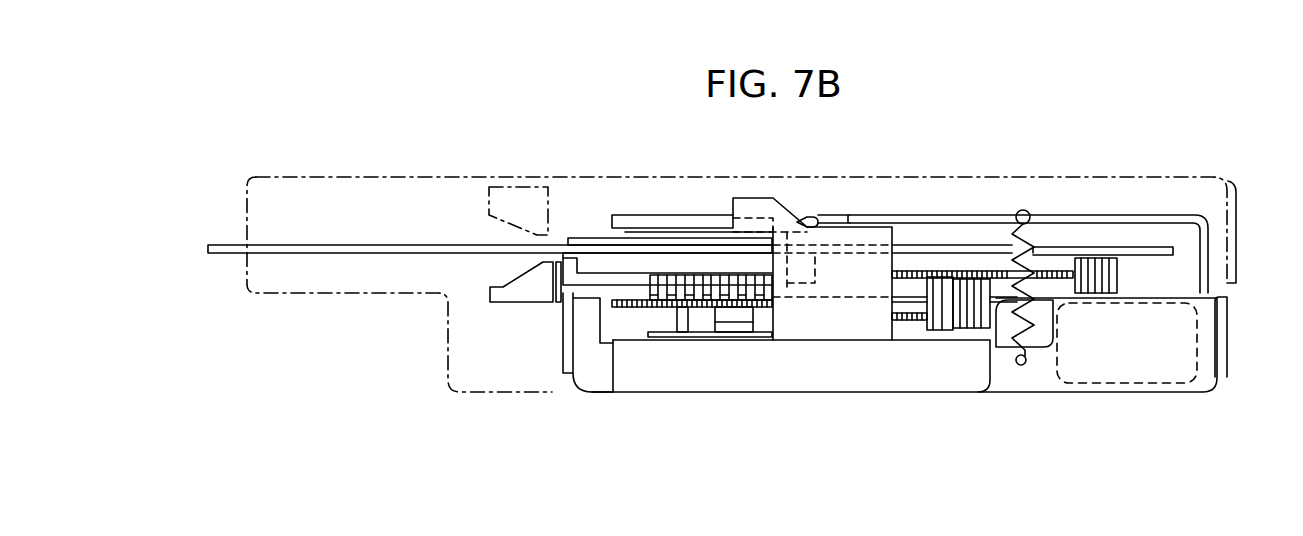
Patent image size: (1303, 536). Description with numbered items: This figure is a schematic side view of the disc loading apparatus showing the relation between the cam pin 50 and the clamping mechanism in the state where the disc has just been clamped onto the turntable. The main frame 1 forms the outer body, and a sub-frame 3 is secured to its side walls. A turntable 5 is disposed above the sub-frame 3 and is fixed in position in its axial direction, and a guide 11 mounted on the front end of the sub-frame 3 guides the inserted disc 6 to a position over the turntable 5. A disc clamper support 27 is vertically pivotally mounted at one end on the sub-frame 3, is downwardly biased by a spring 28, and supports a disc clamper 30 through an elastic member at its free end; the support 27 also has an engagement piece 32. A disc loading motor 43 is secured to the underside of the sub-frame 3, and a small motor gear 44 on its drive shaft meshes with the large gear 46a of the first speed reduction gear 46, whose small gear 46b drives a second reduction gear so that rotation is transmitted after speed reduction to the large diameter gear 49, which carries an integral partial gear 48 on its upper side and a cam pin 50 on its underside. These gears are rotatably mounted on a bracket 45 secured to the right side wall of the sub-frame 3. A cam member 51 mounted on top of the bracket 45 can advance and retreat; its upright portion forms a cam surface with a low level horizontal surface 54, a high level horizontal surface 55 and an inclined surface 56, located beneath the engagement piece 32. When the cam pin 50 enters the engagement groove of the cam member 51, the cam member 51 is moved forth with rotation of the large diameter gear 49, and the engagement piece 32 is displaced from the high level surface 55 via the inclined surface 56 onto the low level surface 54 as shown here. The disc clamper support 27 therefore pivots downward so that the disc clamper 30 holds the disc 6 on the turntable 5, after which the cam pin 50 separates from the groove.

The main frame 1 is at (434, 177).
The sub-frame 3 is at (1228, 357).
The turntable 5 is at (577, 268).
The disc 6 is at (387, 243).
The guide 11 is at (523, 288).
The disc clamper support 27 is at (1107, 214).
The spring 28 is at (1037, 238).
The disc clamper 30 is at (587, 238).
The engagement piece 32 is at (836, 217).
The disc loading motor 43 is at (1193, 332).
The motor gear 44 is at (1103, 260).
The bracket 45 is at (622, 372).
The first speed reduction gear 46 is at (961, 330).
The large gear 46a is at (908, 278).
The small gear 46b is at (955, 313).
The partial gear 48 is at (739, 299).
The large diameter gear 49 is at (707, 308).
The cam pin 50 is at (683, 318).
The cam member 51 is at (803, 333).
The low level horizontal surface 54 is at (871, 227).
The high level horizontal surface 55 is at (745, 197).
The inclined surface 56 is at (798, 219).